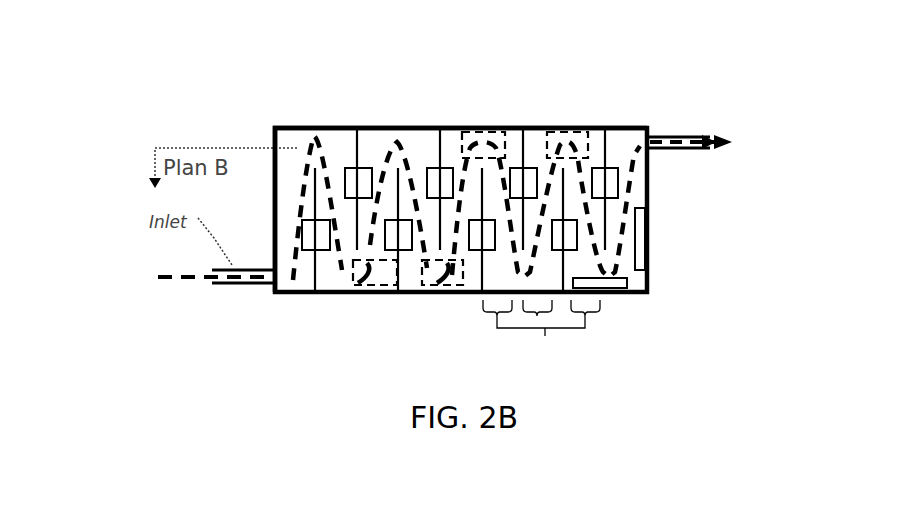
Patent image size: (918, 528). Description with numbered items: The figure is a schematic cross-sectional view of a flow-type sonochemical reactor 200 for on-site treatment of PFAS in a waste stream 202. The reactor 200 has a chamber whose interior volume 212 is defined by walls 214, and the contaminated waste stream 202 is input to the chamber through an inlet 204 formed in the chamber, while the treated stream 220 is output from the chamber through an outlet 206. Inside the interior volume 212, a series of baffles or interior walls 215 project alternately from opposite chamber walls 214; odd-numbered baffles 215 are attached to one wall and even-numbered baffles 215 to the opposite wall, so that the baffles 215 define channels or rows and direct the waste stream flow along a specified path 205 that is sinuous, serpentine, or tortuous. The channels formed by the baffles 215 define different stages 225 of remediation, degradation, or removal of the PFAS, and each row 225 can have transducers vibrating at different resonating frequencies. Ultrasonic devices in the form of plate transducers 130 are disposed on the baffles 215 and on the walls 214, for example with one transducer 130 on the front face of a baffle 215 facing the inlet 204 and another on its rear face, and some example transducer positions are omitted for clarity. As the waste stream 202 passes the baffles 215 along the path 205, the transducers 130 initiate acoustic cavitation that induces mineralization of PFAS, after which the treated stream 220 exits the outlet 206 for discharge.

The flow-type sonochemical reactor 200 is at (230, 108).
The waste stream 202 is at (157, 277).
The inlet 204 is at (237, 293).
The path 205 is at (337, 275).
The outlet 206 is at (660, 128).
The interior volume 212 is at (290, 140).
The walls 214 is at (363, 125).
The baffles 215 is at (376, 160).
The treated stream 220 is at (728, 135).
The stages 225 is at (541, 335).
The plate transducers 130 is at (515, 165).